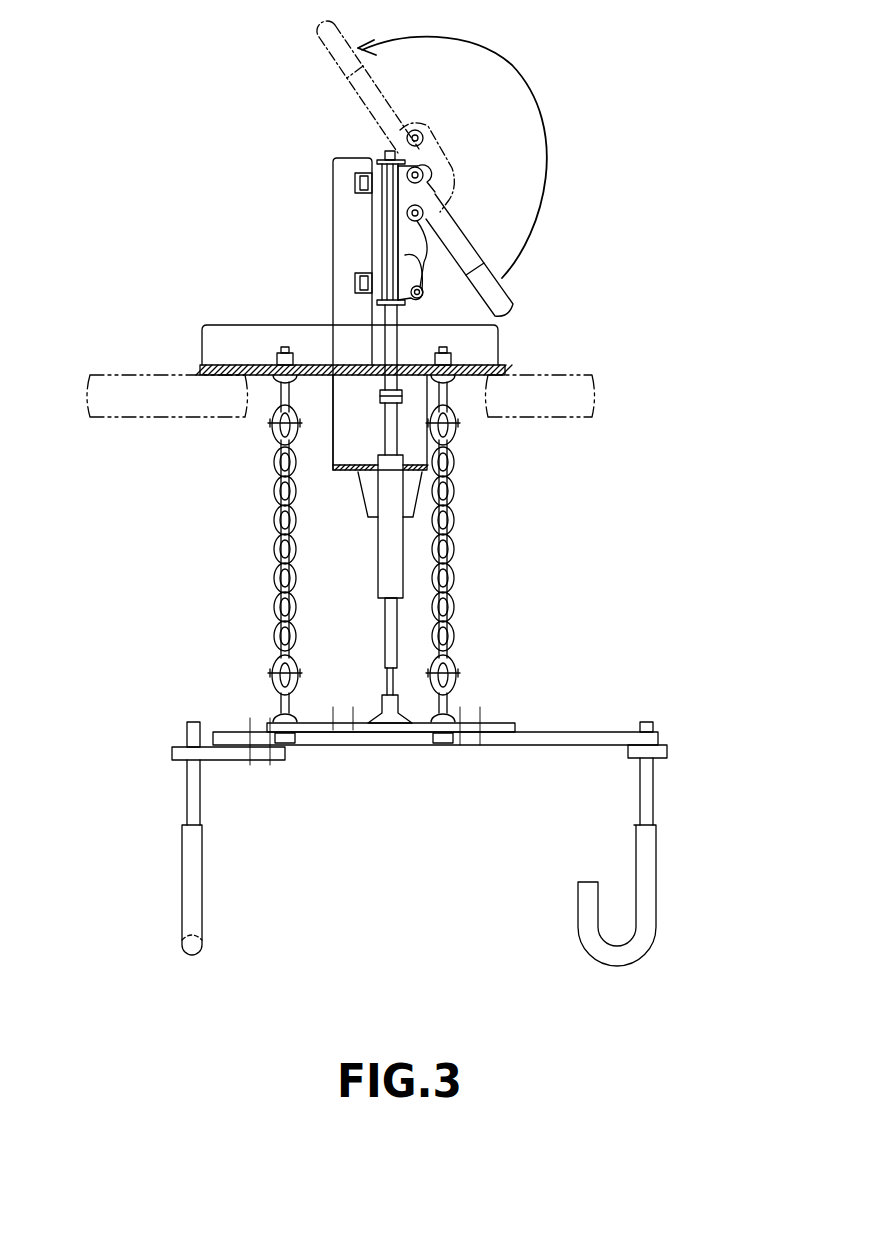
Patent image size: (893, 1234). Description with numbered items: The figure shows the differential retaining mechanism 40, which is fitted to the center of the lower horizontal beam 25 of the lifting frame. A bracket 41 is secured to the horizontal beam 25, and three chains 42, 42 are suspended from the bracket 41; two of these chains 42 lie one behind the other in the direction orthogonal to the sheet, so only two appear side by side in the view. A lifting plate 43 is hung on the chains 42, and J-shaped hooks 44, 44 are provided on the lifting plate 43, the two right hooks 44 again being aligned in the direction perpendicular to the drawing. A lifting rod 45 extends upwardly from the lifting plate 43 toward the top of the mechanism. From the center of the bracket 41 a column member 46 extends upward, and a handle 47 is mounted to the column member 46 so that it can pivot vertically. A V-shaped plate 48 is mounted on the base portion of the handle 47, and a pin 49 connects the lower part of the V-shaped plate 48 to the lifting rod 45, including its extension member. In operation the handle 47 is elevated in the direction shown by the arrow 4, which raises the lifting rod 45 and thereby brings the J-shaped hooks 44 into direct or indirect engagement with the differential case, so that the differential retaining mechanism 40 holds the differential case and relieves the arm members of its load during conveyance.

The differential retaining mechanism 40 is at (622, 253).
The bracket 41 is at (242, 342).
The horizontal beam 25 is at (537, 425).
The column member 46 is at (343, 235).
The V-shaped plate 48 is at (440, 246).
The pin 49 is at (415, 302).
The handle 47 is at (497, 298).
The arrow 4 is at (537, 110).
The chain 42 is at (275, 577).
The lifting rod 45 is at (385, 637).
The lifting plate 43 is at (405, 728).
The J-shaped hook 44 is at (195, 960).